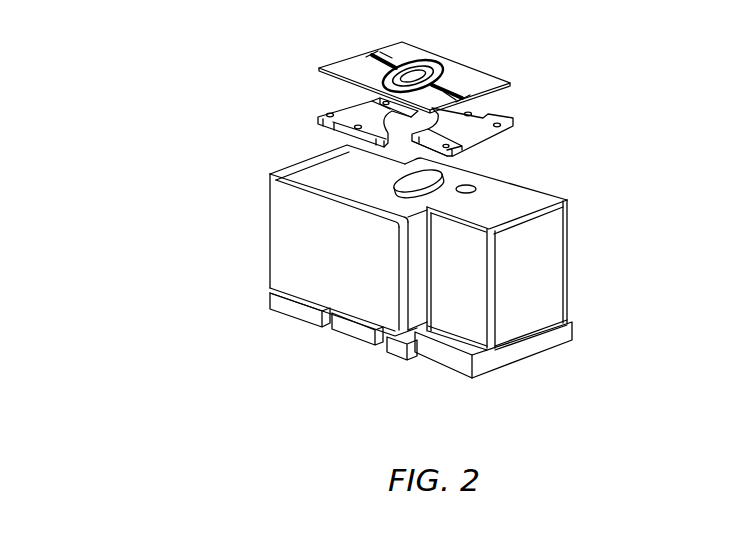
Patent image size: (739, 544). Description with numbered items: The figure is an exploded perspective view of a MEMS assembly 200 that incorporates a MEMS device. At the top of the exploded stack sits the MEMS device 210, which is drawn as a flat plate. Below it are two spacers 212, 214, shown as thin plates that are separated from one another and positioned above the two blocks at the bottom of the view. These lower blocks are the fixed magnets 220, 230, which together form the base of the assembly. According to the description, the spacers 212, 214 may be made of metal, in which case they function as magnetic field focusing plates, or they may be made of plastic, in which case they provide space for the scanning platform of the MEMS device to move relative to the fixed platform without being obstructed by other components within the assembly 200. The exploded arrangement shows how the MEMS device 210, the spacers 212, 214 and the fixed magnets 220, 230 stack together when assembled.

The MEMS assembly 200 is at (124, 151).
The MEMS device 210 is at (511, 81).
The spacer 212 is at (322, 110).
The spacer 214 is at (514, 133).
The fixed magnet 220 is at (270, 190).
The fixed magnet 230 is at (555, 198).